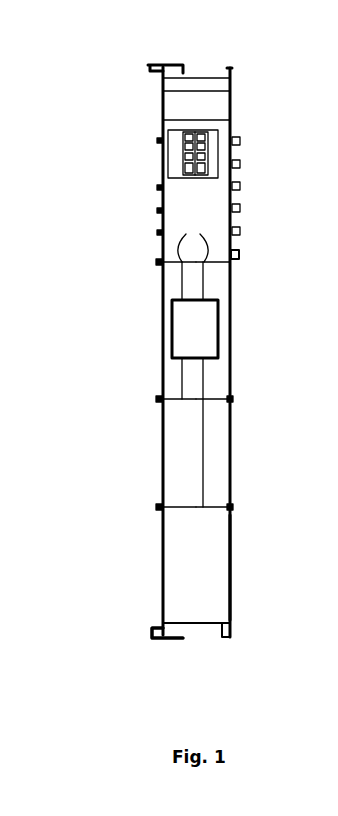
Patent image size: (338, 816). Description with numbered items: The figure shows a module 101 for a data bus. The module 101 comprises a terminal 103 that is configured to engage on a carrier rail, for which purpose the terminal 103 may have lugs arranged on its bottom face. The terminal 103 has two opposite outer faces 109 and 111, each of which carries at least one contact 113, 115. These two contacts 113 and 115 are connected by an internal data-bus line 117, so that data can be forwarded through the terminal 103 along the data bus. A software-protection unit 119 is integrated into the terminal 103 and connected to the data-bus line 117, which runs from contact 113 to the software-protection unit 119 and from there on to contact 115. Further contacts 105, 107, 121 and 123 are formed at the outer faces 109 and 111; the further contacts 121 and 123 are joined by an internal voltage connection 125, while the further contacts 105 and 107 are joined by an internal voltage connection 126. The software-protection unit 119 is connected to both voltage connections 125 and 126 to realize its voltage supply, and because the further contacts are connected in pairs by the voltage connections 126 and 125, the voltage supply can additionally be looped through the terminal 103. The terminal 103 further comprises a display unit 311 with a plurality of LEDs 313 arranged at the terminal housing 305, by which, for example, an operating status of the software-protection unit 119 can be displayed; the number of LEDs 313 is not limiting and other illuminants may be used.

The module 101 is at (133, 85).
The terminal 103 is at (205, 610).
The further contact 105 is at (157, 399).
The further contact 107 is at (232, 398).
The outer face 109 is at (228, 593).
The outer face 111 is at (162, 584).
The contact 113 is at (157, 260).
The contact 115 is at (235, 262).
The internal data-bus line 117 is at (196, 257).
The software-protection unit 119 is at (197, 343).
The further contact 121 is at (157, 506).
The further contact 123 is at (232, 506).
The internal voltage connection 125 is at (190, 508).
The internal voltage connection 126 is at (190, 399).
The terminal housing 305 is at (177, 592).
The display unit 311 is at (170, 162).
The LEDs 313 is at (198, 163).